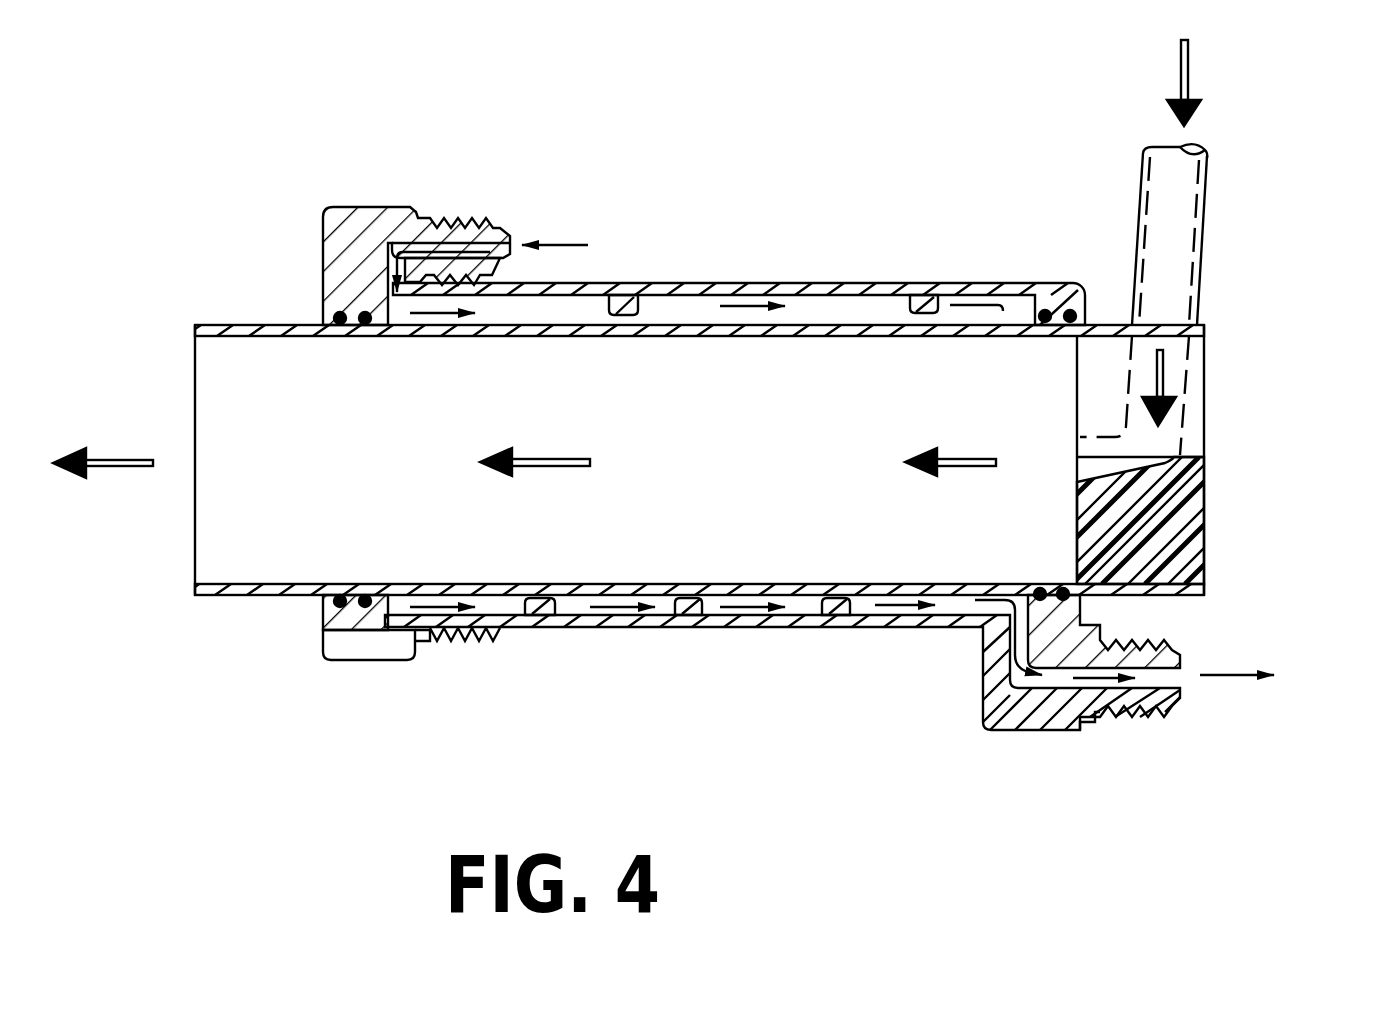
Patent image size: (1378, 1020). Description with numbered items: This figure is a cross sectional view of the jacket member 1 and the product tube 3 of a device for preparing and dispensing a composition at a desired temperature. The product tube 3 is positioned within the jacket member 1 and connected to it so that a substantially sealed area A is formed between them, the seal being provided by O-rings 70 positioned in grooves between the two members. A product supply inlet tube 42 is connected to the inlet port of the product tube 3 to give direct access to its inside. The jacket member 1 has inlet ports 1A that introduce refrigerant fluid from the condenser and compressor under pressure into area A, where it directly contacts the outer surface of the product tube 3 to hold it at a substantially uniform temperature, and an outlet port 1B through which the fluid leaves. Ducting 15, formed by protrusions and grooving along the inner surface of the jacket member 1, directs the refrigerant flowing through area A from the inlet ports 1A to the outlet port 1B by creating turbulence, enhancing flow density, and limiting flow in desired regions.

The jacket member 1 is at (808, 282).
The inlet ports 1A is at (392, 207).
The outlet port 1B is at (1048, 732).
The product tube 3 is at (235, 322).
The ducting 15 is at (910, 306).
The O-rings 70 is at (1045, 314).
The product supply inlet tube 42 is at (1205, 197).
The sealed area A is at (523, 313).